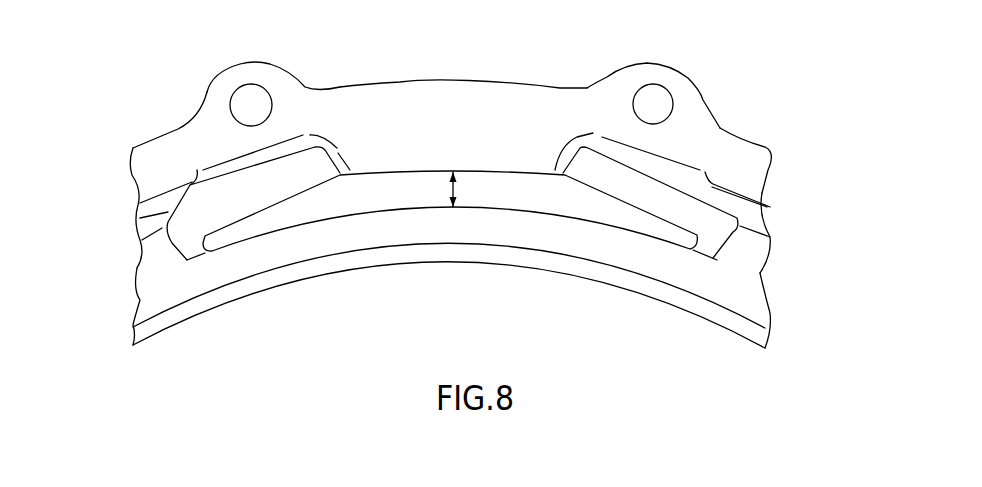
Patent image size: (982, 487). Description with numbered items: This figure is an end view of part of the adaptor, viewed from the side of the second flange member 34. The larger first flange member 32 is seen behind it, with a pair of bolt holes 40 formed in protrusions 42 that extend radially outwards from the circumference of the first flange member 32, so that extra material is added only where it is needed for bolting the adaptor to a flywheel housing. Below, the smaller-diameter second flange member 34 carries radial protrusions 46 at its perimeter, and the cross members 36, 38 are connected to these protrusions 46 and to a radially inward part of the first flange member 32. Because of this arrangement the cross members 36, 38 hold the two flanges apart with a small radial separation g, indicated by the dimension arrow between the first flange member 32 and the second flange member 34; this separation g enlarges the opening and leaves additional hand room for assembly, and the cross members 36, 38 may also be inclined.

The first flange member 32 is at (760, 167).
The second flange member 34 is at (473, 261).
The cross member 36 is at (753, 218).
The cross member 38 is at (140, 219).
The bolt hole 40 is at (252, 105).
The protrusion 42 is at (207, 90).
The protrusion 46 is at (138, 260).
The radial separation g is at (453, 177).